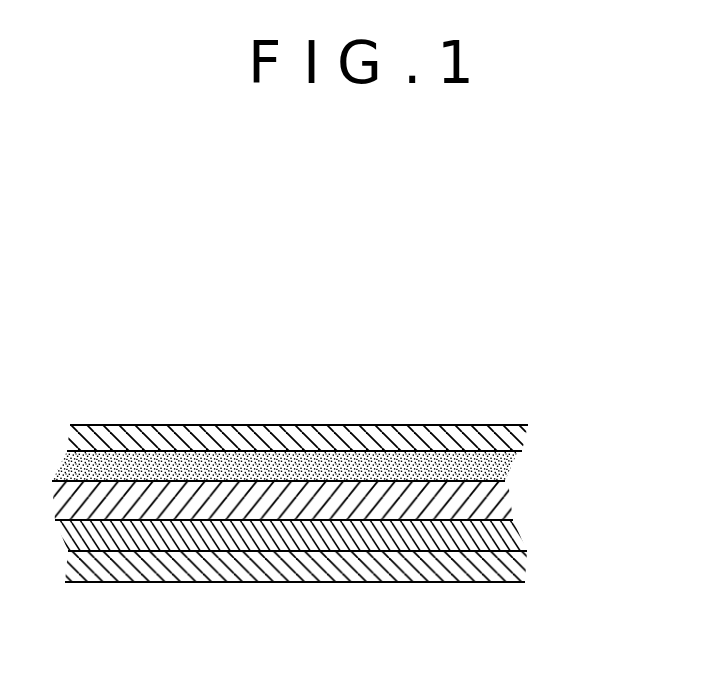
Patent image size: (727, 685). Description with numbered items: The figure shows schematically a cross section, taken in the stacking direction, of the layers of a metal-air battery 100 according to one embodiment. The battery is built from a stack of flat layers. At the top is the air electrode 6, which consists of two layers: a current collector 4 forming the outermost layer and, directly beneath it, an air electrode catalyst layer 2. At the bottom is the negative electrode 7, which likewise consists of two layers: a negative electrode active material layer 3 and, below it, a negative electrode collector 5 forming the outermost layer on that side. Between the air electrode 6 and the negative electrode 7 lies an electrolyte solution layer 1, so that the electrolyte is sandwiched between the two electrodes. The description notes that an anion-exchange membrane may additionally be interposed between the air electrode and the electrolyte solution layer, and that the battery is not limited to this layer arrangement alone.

The metal-air battery 100 is at (397, 387).
The electrolyte solution layer 1 is at (488, 500).
The air electrode catalyst layer 2 is at (517, 468).
The negative electrode active material layer 3 is at (515, 533).
The current collector 4 is at (512, 435).
The negative electrode collector 5 is at (520, 557).
The air electrode 6 is at (625, 422).
The negative electrode 7 is at (625, 518).